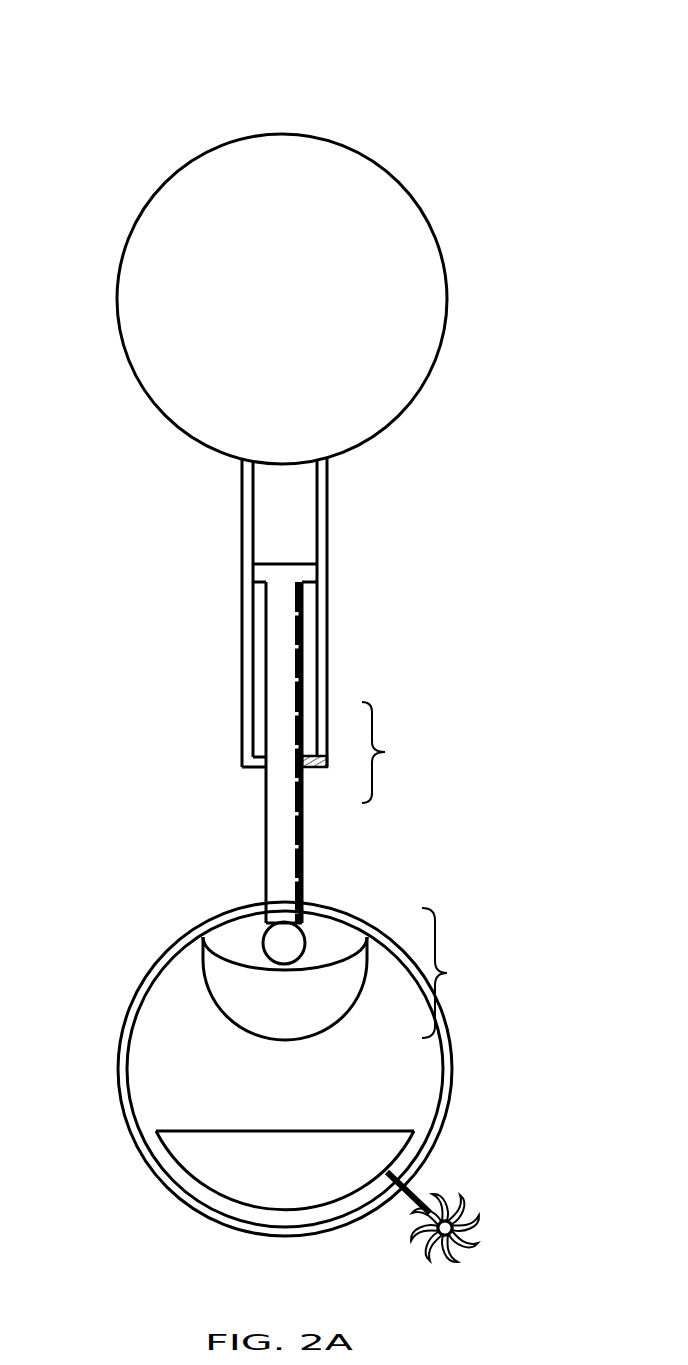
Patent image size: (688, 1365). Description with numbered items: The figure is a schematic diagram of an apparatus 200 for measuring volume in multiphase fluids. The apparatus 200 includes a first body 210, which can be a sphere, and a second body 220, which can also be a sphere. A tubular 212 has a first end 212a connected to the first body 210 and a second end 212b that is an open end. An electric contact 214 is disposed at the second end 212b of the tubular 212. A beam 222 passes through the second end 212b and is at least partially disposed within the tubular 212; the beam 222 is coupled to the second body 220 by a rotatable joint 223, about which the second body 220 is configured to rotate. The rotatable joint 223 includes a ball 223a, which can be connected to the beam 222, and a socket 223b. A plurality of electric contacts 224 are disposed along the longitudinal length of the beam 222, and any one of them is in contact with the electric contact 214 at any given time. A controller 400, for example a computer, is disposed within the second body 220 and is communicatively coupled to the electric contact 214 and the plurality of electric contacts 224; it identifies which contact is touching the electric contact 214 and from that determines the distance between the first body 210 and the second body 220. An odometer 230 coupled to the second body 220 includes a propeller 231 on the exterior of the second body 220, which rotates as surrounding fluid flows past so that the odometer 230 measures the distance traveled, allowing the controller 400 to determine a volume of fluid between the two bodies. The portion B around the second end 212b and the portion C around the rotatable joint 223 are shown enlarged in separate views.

The apparatus 200 is at (504, 75).
The first body 210 is at (125, 242).
The tubular 212 is at (252, 633).
The first end 212a is at (240, 466).
The second end 212b is at (242, 768).
The electric contact 214 is at (327, 767).
The beam 222 is at (242, 752).
The plurality of electric contacts 224 is at (302, 628).
The rotatable joint 223 is at (302, 956).
The ball 223a is at (310, 943).
The socket 223b is at (367, 958).
The second body 220 is at (105, 1065).
The controller 400 is at (307, 1170).
The odometer 230 is at (503, 1217).
The propeller 231 is at (467, 1205).
The portion B is at (384, 752).
The portion C is at (446, 973).